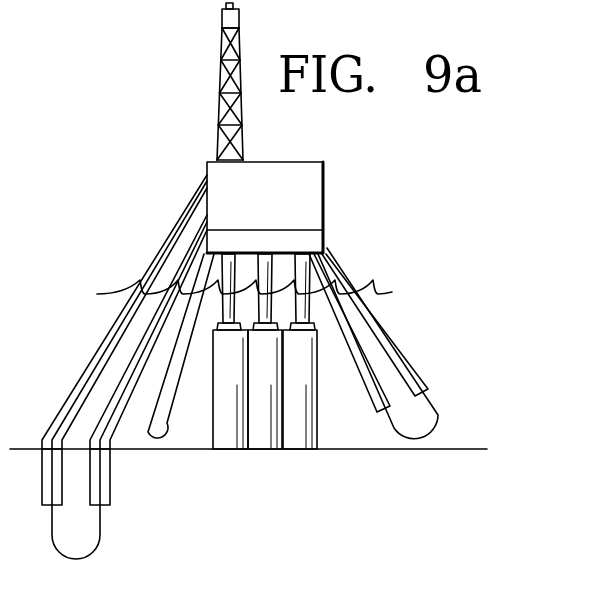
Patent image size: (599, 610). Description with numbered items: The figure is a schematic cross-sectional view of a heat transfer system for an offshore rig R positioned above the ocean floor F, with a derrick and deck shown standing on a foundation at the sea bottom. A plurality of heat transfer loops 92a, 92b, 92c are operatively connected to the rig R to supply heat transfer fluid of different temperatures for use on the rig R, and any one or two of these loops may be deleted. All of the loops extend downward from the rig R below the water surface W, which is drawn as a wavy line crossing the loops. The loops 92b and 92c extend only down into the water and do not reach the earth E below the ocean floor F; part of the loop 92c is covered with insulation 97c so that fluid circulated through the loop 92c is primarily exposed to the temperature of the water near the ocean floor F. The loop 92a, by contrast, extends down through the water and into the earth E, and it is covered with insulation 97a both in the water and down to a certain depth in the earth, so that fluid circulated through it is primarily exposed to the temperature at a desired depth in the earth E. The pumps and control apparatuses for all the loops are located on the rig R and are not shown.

The offshore rig R is at (325, 200).
The water surface W is at (112, 293).
The ocean floor F is at (338, 448).
The earth E is at (368, 503).
The insulation 97a is at (82, 380).
The heat transfer loop 92a is at (100, 532).
The heat transfer loop 92b is at (168, 423).
The insulation 97c is at (396, 343).
The heat transfer loop 92c is at (412, 364).